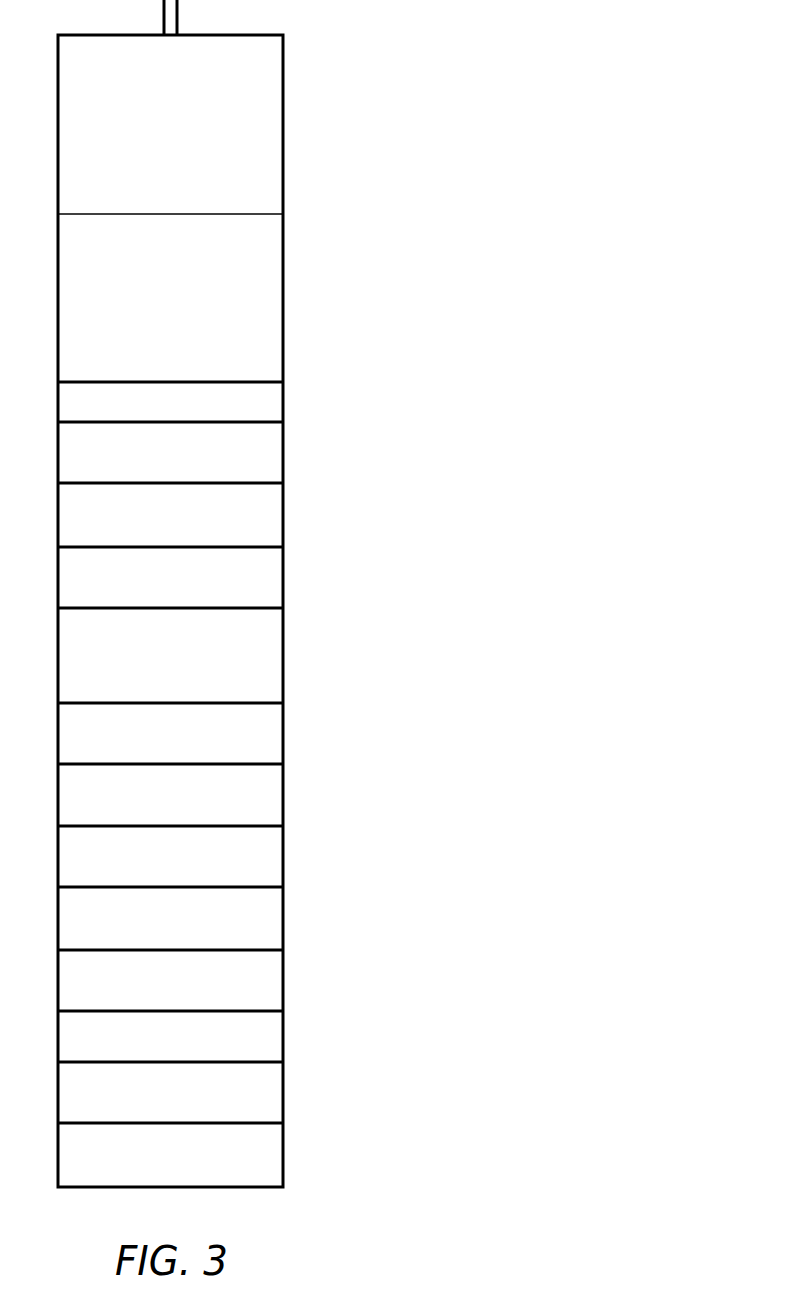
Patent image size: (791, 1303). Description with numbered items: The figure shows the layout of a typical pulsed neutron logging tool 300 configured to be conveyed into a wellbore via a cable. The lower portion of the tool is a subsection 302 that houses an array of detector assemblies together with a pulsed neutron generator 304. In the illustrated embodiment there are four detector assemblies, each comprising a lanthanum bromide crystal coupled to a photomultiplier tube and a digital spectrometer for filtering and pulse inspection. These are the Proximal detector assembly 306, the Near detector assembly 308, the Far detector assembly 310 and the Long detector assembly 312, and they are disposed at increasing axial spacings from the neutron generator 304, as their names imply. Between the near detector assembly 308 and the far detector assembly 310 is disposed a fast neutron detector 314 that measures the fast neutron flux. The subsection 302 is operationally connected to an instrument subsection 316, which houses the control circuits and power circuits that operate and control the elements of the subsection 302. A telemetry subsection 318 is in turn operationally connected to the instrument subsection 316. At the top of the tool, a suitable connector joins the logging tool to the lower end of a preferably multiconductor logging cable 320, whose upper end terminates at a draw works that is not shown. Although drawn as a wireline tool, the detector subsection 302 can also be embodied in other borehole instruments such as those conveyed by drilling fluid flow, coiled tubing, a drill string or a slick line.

The pulsed neutron logging tool 300 is at (246, 593).
The subsection 302 is at (210, 673).
The pulsed neutron generator 304 is at (245, 1105).
The Proximal (Prox) detector assembly 306 is at (254, 993).
The Near detector assembly 308 is at (250, 868).
The Far detector assembly 310 is at (243, 580).
The Long detector assembly 312 is at (248, 460).
The fast neutron detector 314 is at (252, 755).
The instrument subsection 316 is at (237, 353).
The telemetry subsection 318 is at (237, 203).
The logging cable 320 is at (170, 22).